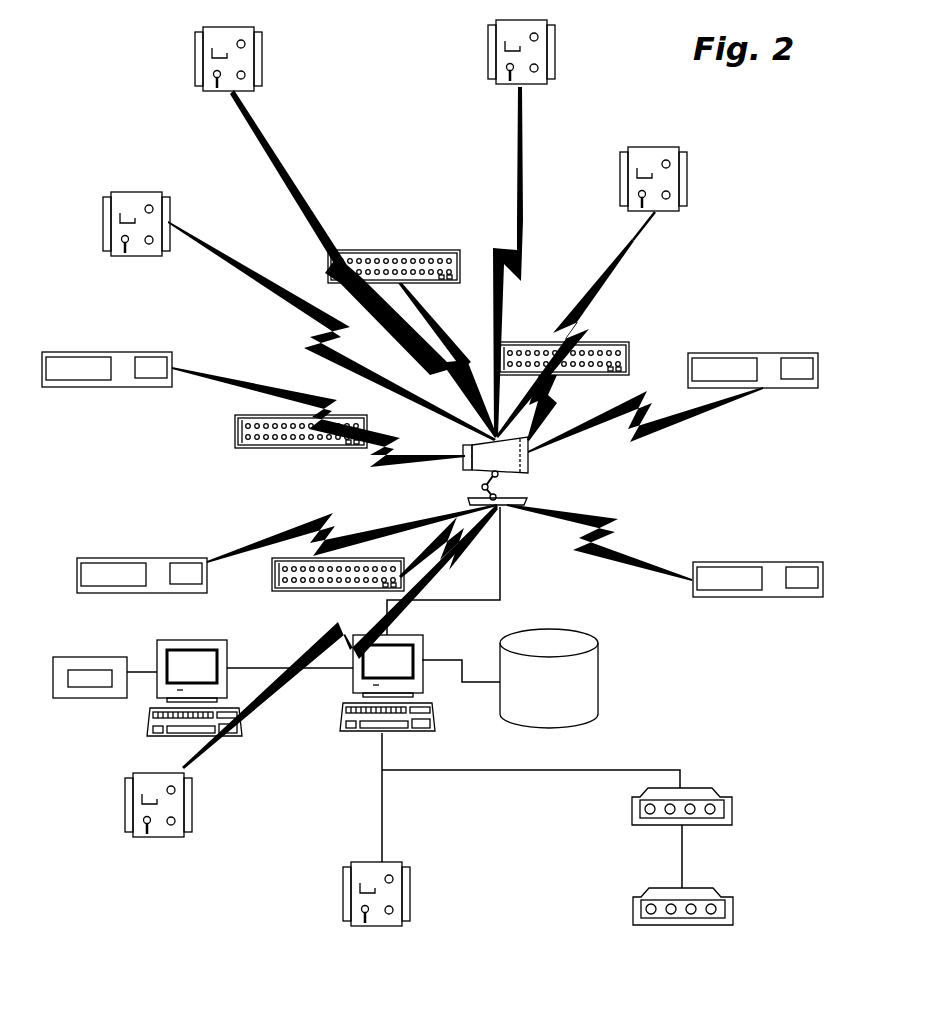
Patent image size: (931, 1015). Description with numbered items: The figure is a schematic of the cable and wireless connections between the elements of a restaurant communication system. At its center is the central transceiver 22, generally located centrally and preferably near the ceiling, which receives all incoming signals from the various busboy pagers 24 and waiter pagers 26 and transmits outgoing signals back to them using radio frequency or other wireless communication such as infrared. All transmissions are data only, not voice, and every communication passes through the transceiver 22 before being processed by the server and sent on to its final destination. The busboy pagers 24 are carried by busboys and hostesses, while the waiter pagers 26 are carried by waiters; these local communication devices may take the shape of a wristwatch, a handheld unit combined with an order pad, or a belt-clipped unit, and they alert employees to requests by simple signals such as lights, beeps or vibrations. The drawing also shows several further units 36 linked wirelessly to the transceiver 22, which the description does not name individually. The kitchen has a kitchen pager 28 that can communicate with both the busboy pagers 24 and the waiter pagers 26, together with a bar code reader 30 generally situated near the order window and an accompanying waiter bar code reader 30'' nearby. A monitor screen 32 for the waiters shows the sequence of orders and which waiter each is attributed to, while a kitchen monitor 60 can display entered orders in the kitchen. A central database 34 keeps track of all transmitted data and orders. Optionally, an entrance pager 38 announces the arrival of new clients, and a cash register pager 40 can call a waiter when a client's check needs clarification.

The central transceiver 22 is at (519, 471).
The busboy pager 24 is at (203, 81).
The waiter pager 26 is at (527, 347).
The kitchen pager 28 is at (388, 868).
The bar code reader 30 is at (727, 797).
The waiter bar code reader 30'' is at (709, 896).
The monitor screen 32 is at (220, 688).
The central database 34 is at (580, 668).
The display panel 36 is at (110, 570).
The entrance pager 38 is at (141, 785).
The cash register pager 40 is at (108, 660).
The kitchen monitor 60 is at (340, 707).